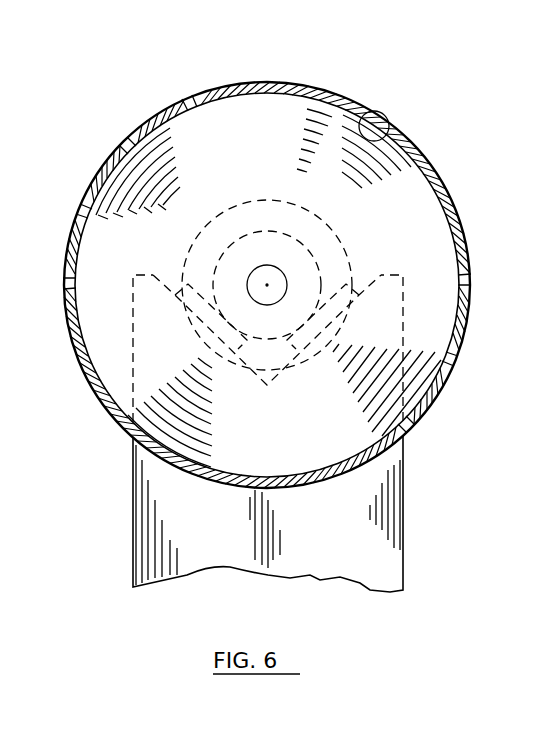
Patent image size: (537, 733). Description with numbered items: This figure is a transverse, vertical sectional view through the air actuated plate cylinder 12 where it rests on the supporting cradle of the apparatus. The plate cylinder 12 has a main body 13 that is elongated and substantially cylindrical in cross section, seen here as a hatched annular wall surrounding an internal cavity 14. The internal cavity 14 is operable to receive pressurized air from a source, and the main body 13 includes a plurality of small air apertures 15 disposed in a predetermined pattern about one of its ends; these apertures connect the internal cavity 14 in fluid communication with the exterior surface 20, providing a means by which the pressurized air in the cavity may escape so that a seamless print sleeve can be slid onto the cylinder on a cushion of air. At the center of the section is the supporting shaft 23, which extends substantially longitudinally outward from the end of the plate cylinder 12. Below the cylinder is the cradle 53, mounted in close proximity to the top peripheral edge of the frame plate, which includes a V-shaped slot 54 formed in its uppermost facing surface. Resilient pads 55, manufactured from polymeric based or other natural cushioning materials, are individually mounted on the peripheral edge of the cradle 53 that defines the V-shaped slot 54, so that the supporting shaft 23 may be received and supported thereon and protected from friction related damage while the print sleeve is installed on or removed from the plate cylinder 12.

The air actuated plate cylinder 12 is at (438, 131).
The main body 13 is at (442, 170).
The internal cavity 14 is at (374, 111).
The small air apertures 15 is at (68, 285).
The exterior surface 20 is at (290, 81).
The supporting shaft 23 is at (286, 231).
The cradle 53 is at (410, 488).
The V-shaped slot 54 is at (405, 326).
The resilient pads 55 is at (349, 260).